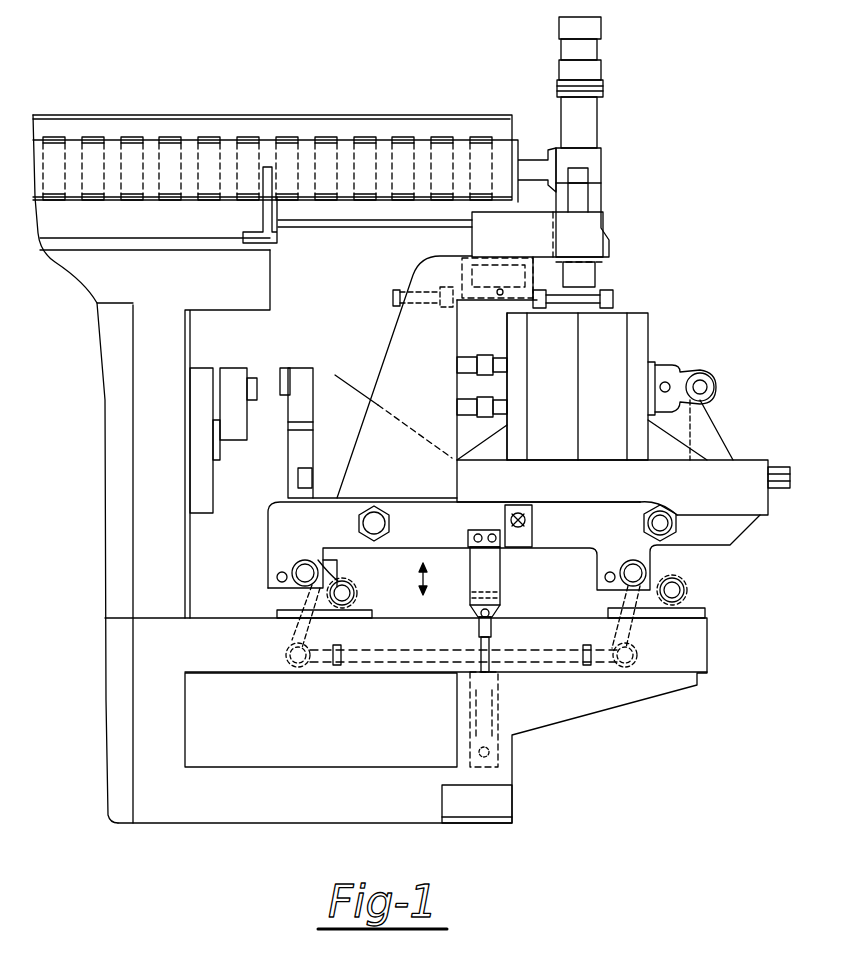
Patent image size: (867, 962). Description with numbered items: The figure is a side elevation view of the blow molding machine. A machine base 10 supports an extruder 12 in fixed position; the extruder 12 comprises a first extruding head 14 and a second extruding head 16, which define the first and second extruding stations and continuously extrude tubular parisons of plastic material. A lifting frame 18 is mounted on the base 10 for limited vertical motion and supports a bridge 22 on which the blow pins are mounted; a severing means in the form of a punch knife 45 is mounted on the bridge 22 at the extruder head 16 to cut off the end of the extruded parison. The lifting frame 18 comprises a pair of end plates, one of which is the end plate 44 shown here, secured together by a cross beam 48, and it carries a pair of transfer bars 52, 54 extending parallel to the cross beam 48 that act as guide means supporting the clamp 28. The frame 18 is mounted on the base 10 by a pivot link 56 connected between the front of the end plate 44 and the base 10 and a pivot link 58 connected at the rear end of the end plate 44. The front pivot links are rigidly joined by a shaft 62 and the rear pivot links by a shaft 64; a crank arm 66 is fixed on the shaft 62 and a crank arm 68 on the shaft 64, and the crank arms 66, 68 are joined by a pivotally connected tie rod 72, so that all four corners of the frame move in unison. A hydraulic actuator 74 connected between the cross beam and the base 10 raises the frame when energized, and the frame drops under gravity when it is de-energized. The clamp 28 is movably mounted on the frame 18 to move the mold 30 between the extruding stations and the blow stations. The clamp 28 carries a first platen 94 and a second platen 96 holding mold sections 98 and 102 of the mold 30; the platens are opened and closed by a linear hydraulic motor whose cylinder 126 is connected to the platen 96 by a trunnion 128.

The machine base 10 is at (515, 753).
The extruder 12 is at (290, 105).
The first extruding head 14 is at (400, 318).
The second extruding head 16 is at (604, 115).
The lifting frame 18 is at (668, 557).
The bridge 22 is at (400, 282).
The clamp 28 is at (662, 306).
The mold 30 is at (628, 306).
The end plate 44 is at (275, 530).
The punch knife 45 is at (605, 290).
The cross beam 48 is at (500, 578).
The transfer bar 52 is at (675, 510).
The transfer bar 54 is at (392, 516).
The pivot link 56 is at (690, 580).
The pivot link 58 is at (356, 582).
The shaft 62 is at (648, 553).
The shaft 64 is at (340, 560).
The crank arm 66 is at (640, 643).
The crank arm 68 is at (312, 650).
The tie rod 72 is at (398, 655).
The hydraulic actuator 74 is at (500, 710).
The first platen 94 is at (643, 337).
The second platen 96 is at (515, 440).
The mold section 98 is at (568, 448).
The mold section 102 is at (600, 445).
The cylinder 126 is at (470, 357).
The trunnion 128 is at (352, 372).